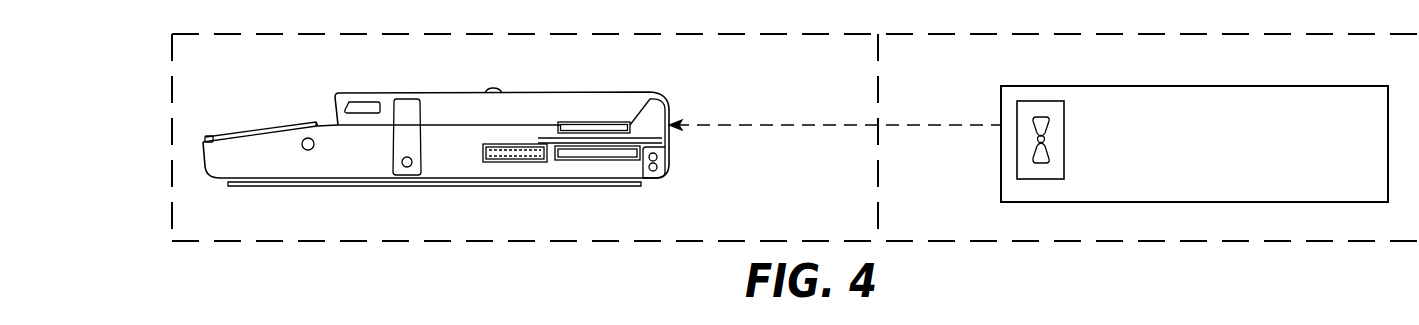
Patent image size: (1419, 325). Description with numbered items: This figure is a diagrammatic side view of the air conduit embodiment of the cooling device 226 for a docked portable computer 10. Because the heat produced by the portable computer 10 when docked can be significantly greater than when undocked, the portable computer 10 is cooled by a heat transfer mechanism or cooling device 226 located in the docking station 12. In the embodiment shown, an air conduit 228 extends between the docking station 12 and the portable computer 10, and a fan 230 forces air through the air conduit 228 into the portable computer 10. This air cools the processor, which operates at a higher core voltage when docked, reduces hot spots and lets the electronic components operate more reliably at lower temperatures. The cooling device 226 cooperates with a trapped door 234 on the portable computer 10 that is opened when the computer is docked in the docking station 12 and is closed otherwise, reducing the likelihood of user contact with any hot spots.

The portable computer 10 is at (525, 92).
The docking station 12 is at (1198, 87).
The cooling device 226 is at (1064, 123).
The air conduit 228 is at (780, 125).
The fan 230 is at (1042, 163).
The trapped door 234 is at (669, 104).